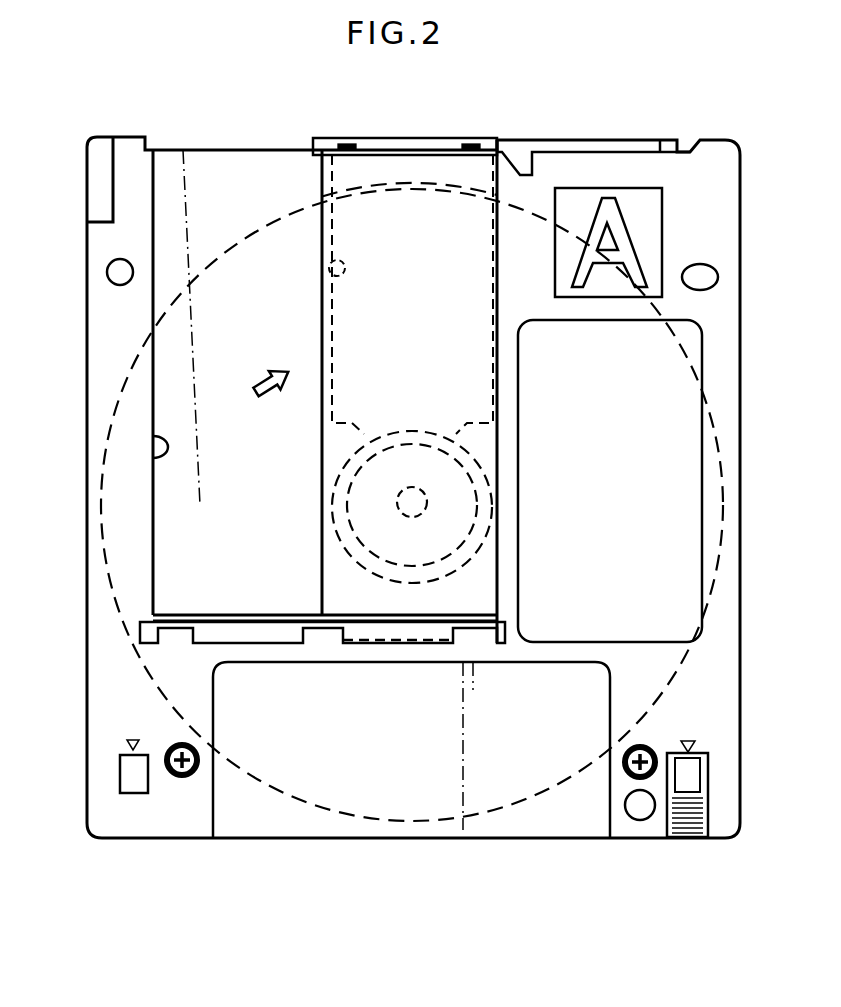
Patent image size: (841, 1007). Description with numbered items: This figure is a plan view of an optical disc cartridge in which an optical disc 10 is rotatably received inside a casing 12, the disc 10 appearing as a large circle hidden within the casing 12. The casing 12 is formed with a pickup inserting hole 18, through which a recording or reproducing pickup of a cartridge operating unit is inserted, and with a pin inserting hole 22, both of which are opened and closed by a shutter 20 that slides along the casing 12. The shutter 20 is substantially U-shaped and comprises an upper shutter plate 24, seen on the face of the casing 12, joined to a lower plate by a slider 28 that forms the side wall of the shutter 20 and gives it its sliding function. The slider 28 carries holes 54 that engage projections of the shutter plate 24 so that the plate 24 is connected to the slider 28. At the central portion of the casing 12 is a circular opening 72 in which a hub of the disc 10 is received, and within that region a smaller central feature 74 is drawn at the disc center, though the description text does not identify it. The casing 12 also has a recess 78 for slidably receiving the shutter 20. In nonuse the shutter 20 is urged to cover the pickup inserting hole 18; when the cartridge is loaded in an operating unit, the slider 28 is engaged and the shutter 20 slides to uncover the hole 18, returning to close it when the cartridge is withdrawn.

The optical disc 10 is at (724, 521).
The casing 12 is at (100, 330).
The pickup inserting hole 18 is at (328, 263).
The shutter 20 is at (253, 385).
The pin inserting hole 22 is at (107, 270).
The upper shutter plate 24 is at (320, 178).
The slider 28 is at (407, 140).
The hole 54 is at (475, 142).
The circular opening 72 is at (492, 465).
The center hole 74 is at (472, 512).
The recess 78 is at (153, 457).